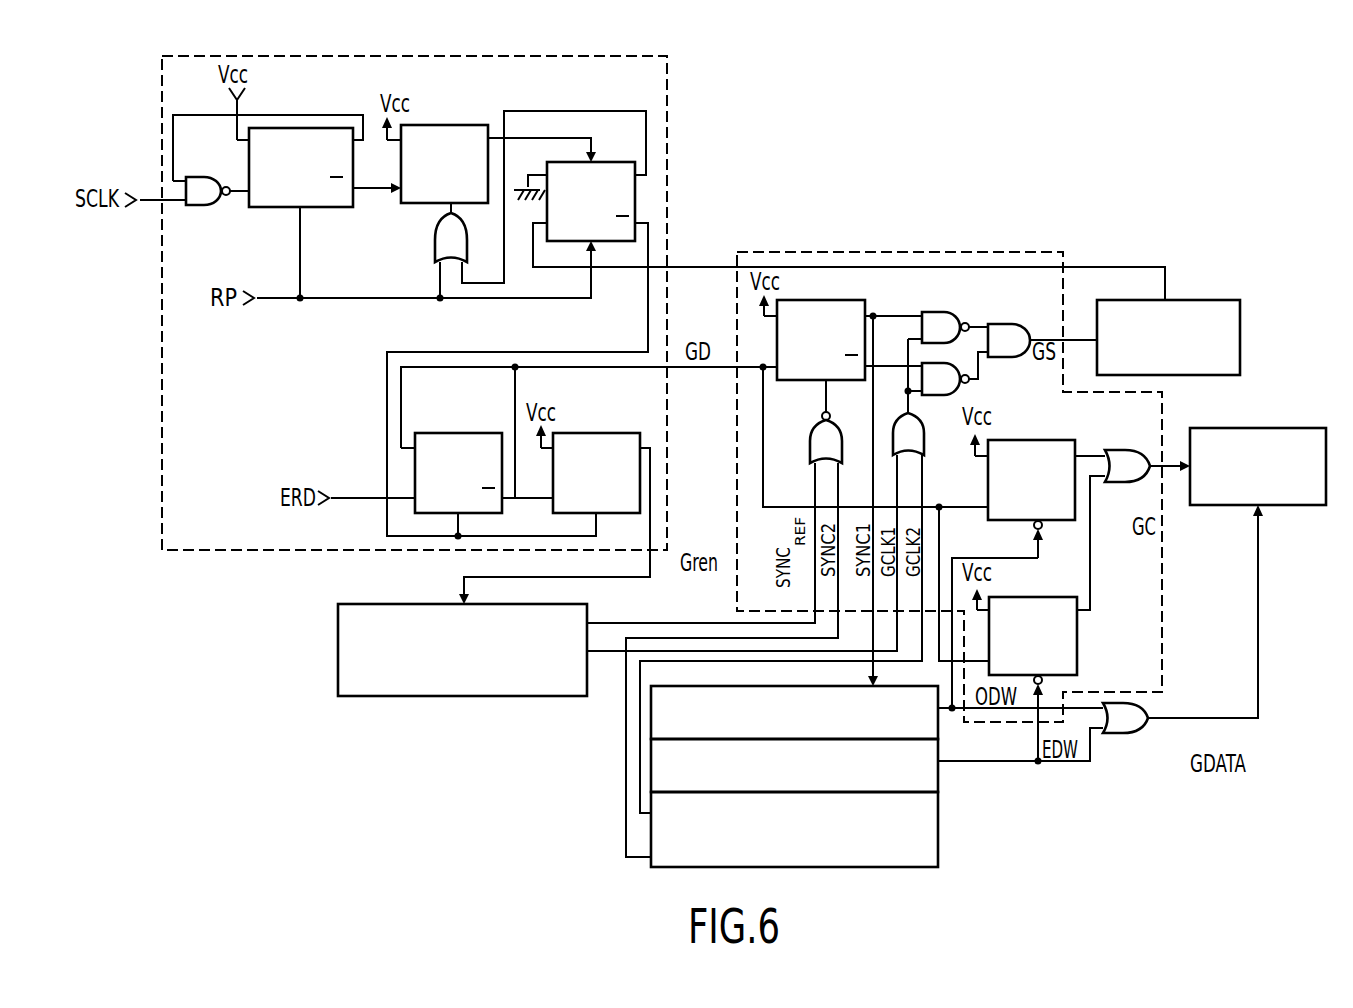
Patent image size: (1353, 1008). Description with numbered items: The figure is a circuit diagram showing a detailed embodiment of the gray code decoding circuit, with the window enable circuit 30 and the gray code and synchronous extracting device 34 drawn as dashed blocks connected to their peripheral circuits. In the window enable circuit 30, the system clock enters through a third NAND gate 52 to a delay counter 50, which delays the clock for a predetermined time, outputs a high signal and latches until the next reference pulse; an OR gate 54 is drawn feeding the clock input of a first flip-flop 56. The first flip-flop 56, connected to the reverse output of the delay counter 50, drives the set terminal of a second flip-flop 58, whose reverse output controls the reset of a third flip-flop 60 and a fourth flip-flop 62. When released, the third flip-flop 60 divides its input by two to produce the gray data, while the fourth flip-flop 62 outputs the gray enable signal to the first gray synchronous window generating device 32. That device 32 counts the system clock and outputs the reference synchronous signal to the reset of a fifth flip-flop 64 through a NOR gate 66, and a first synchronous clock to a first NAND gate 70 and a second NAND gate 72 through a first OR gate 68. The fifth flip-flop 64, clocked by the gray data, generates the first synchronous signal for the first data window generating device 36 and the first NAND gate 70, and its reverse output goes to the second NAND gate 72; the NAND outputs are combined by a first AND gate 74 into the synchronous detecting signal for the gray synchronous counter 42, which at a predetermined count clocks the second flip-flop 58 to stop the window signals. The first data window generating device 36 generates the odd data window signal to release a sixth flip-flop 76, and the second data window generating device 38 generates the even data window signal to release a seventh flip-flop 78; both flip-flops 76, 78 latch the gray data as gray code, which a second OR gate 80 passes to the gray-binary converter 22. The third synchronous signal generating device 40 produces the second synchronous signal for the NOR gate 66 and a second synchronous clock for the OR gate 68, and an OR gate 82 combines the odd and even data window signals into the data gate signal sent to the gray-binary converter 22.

The gray-binary converter 22 is at (1262, 428).
The window enable circuit 30 is at (667, 100).
The first gray synchronous window generating device 32 is at (360, 603).
The gray code and synchronous extracting device 34 is at (887, 252).
The first data window generating device 36 is at (651, 716).
The second data window generating device 38 is at (651, 770).
The third synchronous signal generating device 40 is at (938, 848).
The gray synchronous counter 42 is at (1218, 300).
The delay counter 50 is at (343, 207).
The third NAND gate 52 is at (208, 176).
The OR gate 54 is at (435, 252).
The first flip-flop 56 is at (445, 125).
The second flip-flop 58 is at (618, 162).
The third flip-flop 60 is at (457, 433).
The fourth flip-flop 62 is at (597, 433).
The fifth flip-flop 64 is at (820, 300).
The NOR gate 66 is at (810, 446).
The first OR gate 68 is at (924, 446).
The first NAND gate 70 is at (935, 312).
The second NAND gate 72 is at (948, 398).
The first AND gate 74 is at (1005, 324).
The sixth flip-flop 76 is at (1022, 440).
The seventh flip-flop 78 is at (1058, 597).
The second OR gate 80 is at (1112, 450).
The OR gate 82 is at (1120, 734).